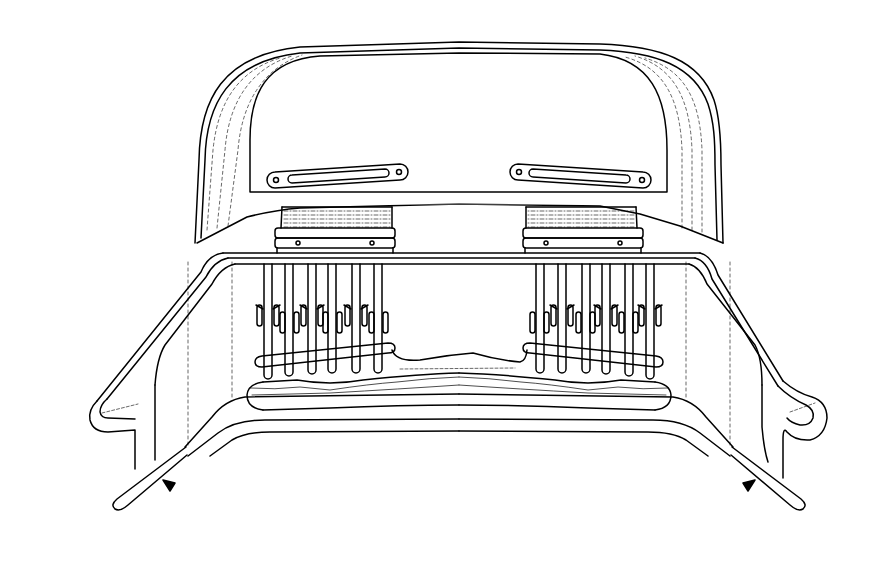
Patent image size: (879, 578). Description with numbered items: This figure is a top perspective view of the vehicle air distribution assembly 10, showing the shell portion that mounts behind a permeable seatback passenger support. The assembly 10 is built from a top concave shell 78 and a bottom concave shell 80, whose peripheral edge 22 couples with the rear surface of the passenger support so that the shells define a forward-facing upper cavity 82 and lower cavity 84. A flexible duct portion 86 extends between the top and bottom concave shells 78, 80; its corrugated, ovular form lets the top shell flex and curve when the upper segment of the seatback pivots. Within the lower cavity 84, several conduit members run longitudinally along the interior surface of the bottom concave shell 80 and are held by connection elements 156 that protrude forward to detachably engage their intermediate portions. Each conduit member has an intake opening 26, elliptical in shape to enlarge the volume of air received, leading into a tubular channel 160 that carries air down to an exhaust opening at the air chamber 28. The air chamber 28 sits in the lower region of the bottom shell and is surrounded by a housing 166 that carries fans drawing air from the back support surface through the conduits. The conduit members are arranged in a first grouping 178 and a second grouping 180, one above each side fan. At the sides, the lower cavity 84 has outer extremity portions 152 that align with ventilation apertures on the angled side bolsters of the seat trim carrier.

The vehicle air distribution assembly 10 is at (130, 52).
The peripheral edge 22 is at (240, 93).
The intake opening 26 is at (302, 178).
The air chamber 28 is at (486, 417).
The top concave shell 78 is at (200, 157).
The bottom concave shell 80 is at (160, 366).
The upper cavity 82 is at (451, 130).
The lower cavity 84 is at (451, 335).
The flexible duct portion 86 is at (275, 245).
The outer extremity portions 152 is at (103, 420).
The connection elements 156 is at (305, 318).
The tubular channel 160 is at (350, 172).
The housing 166 is at (443, 390).
The first grouping of conduit members 178 is at (527, 353).
The second grouping of conduit members 180 is at (390, 353).